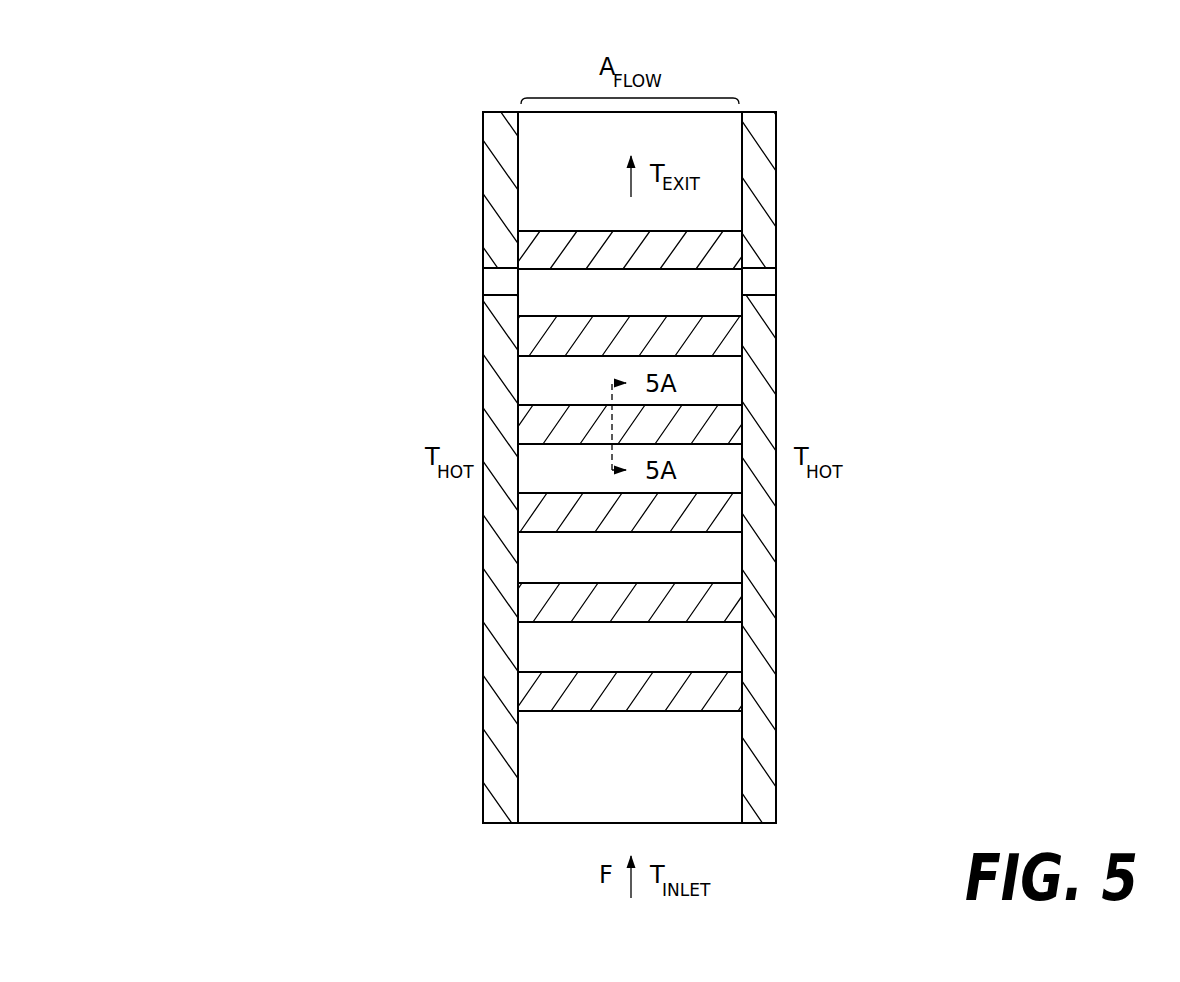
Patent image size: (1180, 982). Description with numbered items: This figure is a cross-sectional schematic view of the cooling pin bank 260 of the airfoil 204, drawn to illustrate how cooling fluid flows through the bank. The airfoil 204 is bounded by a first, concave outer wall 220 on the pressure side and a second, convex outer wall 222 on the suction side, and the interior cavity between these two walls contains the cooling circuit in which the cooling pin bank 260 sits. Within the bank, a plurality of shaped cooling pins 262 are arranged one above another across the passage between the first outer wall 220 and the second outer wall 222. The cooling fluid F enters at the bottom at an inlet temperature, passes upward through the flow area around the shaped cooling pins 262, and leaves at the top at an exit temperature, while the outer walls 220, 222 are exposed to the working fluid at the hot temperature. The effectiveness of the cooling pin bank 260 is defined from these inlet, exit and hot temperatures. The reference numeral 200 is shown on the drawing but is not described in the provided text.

The thermal system 200 is at (308, 70).
The airfoil 204 is at (464, 90).
The first outer wall 220 is at (759, 454).
The second outer wall 222 is at (500, 486).
The cooling pin bank 260 is at (534, 141).
The shaped cooling pins 262 is at (703, 511).